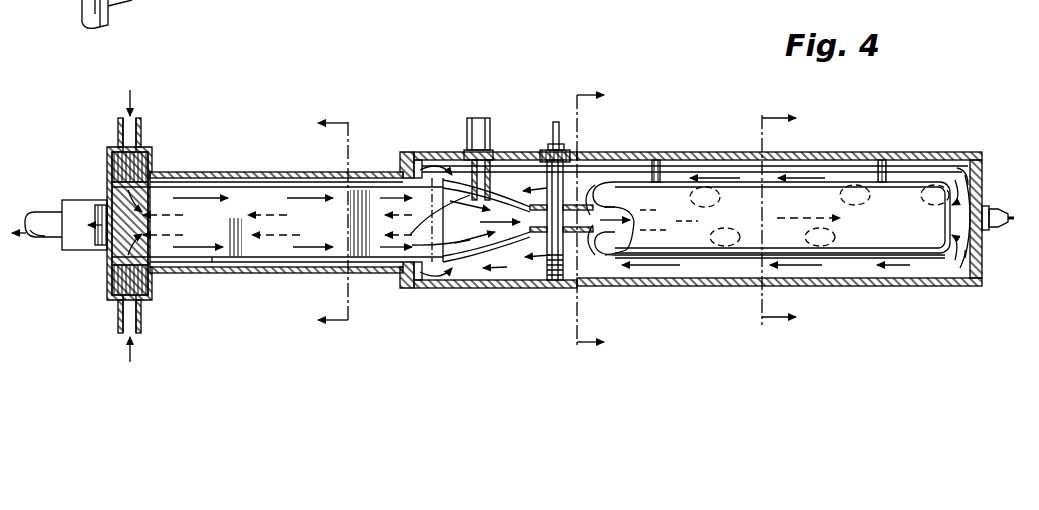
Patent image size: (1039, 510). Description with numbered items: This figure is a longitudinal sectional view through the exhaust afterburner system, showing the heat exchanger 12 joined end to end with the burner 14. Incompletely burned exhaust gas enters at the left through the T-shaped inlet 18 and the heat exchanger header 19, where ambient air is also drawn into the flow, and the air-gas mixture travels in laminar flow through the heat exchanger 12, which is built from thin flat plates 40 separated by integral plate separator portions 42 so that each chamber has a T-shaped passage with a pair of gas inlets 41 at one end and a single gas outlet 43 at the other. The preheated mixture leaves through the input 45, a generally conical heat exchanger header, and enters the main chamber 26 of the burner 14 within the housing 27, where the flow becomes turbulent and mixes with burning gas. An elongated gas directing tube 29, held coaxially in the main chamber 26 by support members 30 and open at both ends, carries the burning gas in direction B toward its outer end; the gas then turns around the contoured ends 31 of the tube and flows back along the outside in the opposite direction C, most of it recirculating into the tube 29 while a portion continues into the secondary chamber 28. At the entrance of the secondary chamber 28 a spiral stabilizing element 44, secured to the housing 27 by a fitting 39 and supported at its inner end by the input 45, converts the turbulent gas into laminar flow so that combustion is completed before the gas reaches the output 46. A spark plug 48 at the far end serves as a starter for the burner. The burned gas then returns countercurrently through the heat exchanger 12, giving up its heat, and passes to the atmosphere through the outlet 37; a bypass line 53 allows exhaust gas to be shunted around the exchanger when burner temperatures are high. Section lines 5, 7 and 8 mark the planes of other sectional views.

The heat exchanger 12 is at (246, 158).
The burner 14 is at (705, 128).
The T-shaped inlet 18 is at (141, 128).
The heat exchanger header 19 is at (107, 160).
The main chamber 26 is at (716, 272).
The housing 27 is at (905, 152).
The secondary chamber 28 is at (516, 271).
The gas directing tube 29 is at (852, 260).
The support members 30 is at (868, 162).
The contoured tube ends 31 is at (598, 258).
The outlet 37 is at (56, 211).
The fitting 39 is at (551, 150).
The plates 40 is at (165, 174).
The gas inlets 41 is at (111, 282).
The plate separator portions 42 is at (211, 263).
The gas outlet 43 is at (263, 252).
The spiral stabilizing element 44 is at (546, 283).
The input 45 is at (472, 254).
The output 46 is at (421, 160).
The spark plug 48 is at (990, 207).
The bypass line 53 is at (488, 120).
The section line 5- 5 is at (322, 222).
The section line 7- 7 is at (791, 218).
The section line 8- 8 is at (602, 219).
The direction B is at (808, 206).
The direction C is at (897, 267).